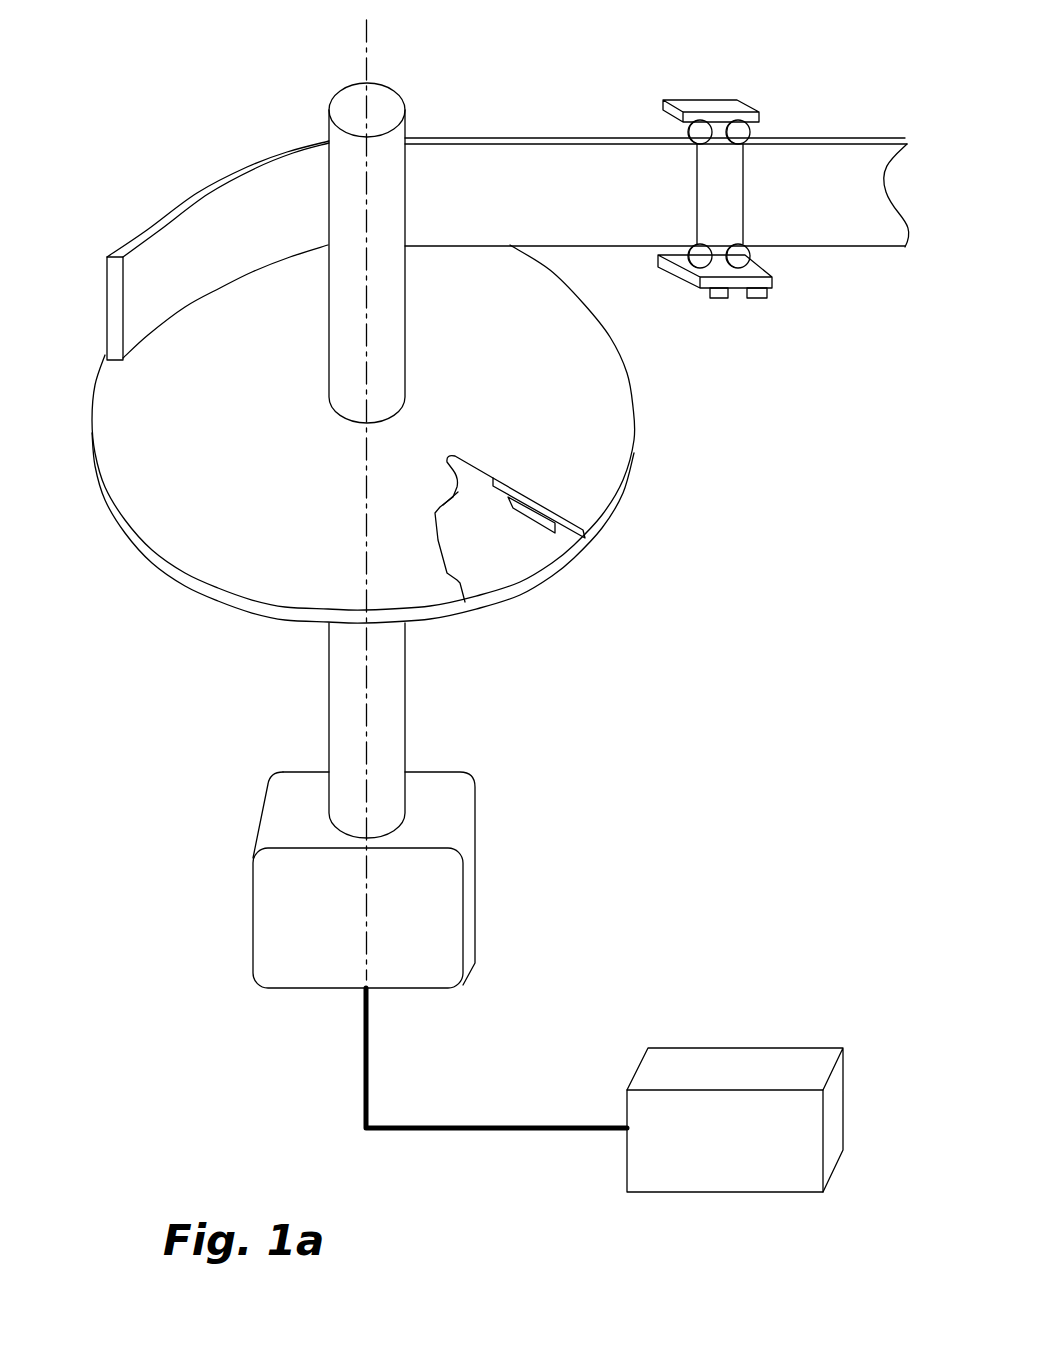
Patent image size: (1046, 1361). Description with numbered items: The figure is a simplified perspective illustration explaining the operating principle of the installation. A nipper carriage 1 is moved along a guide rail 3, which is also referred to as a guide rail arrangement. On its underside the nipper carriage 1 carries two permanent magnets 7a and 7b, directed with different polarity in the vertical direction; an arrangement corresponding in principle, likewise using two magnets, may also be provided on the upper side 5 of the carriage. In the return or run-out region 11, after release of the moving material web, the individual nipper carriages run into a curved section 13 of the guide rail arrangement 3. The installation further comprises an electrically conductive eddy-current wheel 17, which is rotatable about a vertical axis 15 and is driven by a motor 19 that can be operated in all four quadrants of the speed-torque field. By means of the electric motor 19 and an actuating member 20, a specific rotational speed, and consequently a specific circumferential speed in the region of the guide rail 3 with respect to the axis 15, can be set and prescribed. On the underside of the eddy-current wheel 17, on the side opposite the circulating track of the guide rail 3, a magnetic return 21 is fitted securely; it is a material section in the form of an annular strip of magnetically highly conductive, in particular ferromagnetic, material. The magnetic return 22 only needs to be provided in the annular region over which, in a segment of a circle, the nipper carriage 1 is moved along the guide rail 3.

The nipper carriage 1 is at (720, 190).
The guide rail 3 is at (498, 178).
The upper side 5 is at (712, 101).
The permanent magnet 7a is at (725, 297).
The permanent magnet 7b is at (757, 295).
The return or run-out region 11 is at (697, 475).
The curved section 13 is at (215, 210).
The vertical axis 15 is at (366, 67).
The eddy-current wheel 17 is at (570, 410).
The motor 19 is at (413, 908).
The actuating member 20 is at (746, 1070).
The magnetic return 21 is at (523, 512).
The magnetic return 22 is at (517, 513).